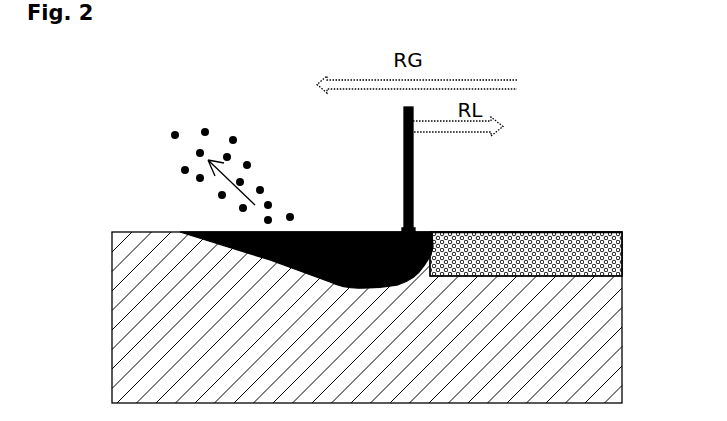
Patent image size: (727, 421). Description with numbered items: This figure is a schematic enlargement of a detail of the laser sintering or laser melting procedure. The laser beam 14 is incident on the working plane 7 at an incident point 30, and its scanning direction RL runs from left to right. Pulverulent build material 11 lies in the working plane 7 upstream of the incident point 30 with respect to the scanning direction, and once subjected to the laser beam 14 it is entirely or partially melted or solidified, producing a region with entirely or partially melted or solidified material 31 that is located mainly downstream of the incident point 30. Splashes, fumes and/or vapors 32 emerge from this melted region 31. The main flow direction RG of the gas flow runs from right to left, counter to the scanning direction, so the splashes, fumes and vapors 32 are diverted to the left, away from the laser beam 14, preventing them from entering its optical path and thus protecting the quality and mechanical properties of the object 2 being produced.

The object 2 is at (503, 333).
The working plane 7 is at (547, 232).
The pulverulent build material 11 is at (623, 255).
The laser beam 14 is at (415, 178).
The incident point 30 is at (415, 227).
The region with entirely or partially melted or solidified material 31 is at (320, 232).
The splashes, fumes and/or vapors 32 is at (200, 153).